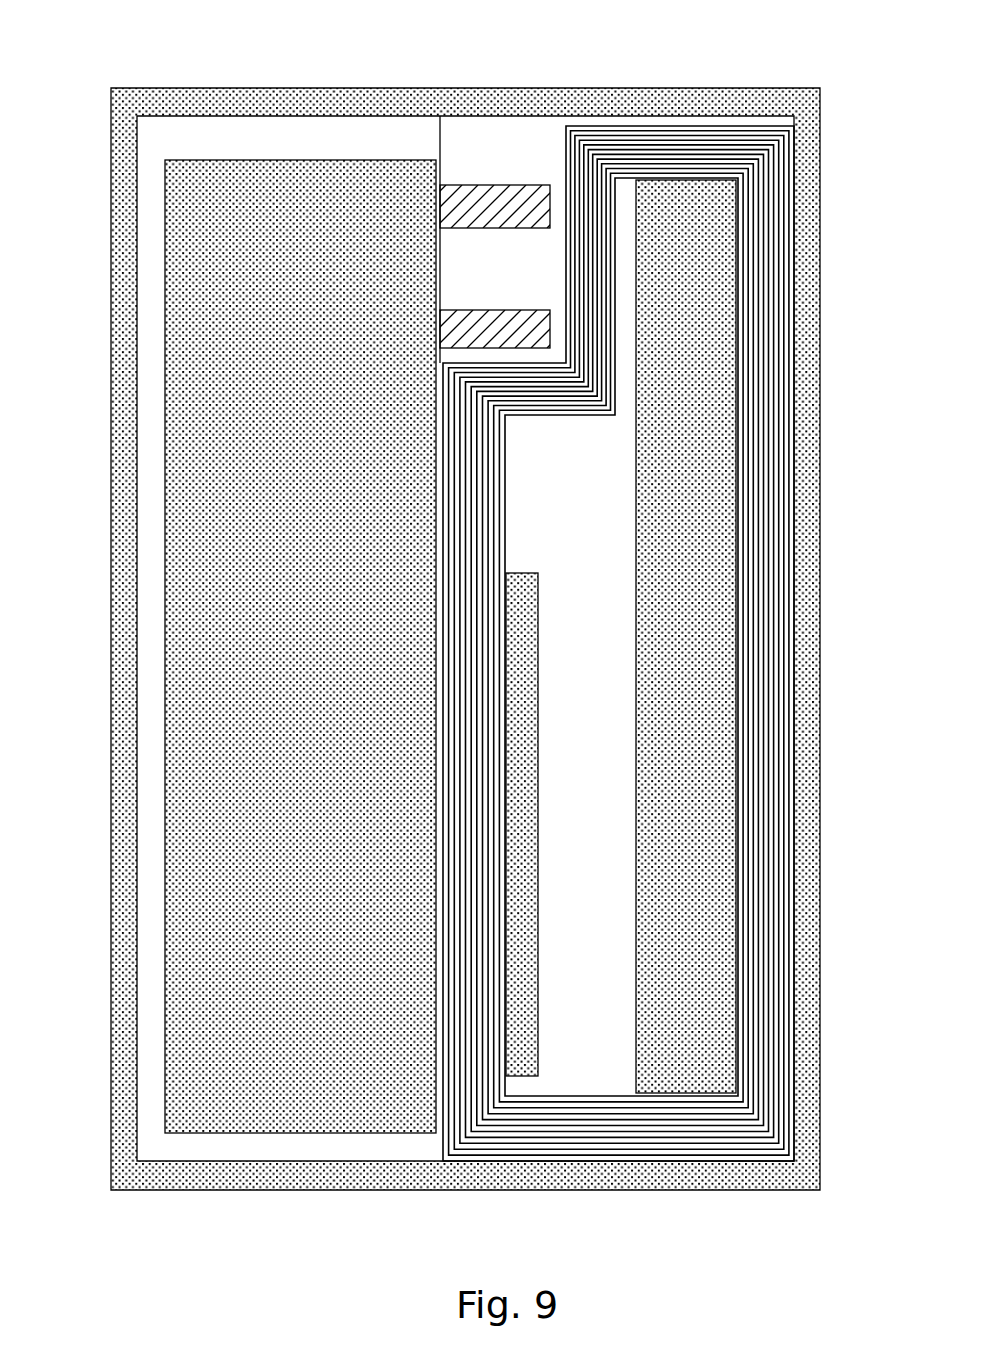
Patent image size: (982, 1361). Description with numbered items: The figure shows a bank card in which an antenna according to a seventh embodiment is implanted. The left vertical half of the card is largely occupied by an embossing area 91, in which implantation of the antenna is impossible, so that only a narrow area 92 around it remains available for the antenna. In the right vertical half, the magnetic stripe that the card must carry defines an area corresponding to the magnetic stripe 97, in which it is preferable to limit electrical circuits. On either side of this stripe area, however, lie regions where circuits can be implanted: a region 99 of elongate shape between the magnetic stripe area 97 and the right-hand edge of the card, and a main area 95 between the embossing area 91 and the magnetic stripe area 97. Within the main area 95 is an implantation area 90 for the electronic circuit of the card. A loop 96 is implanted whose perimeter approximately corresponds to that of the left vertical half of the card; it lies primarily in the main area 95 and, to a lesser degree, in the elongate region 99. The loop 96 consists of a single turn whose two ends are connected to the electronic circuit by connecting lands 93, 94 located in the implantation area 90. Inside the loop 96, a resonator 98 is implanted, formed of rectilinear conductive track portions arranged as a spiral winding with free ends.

The implantation area 90 is at (461, 633).
The embossing area 91 is at (180, 642).
The narrow area 92 is at (145, 798).
The connecting land 93 is at (483, 188).
The connecting land 94 is at (496, 322).
The main area 95 is at (588, 1033).
The loop 96 is at (432, 135).
The area corresponding to the magnetic stripe 97 is at (676, 190).
The resonator 98 is at (578, 406).
The region of elongate shape 99 is at (659, 643).